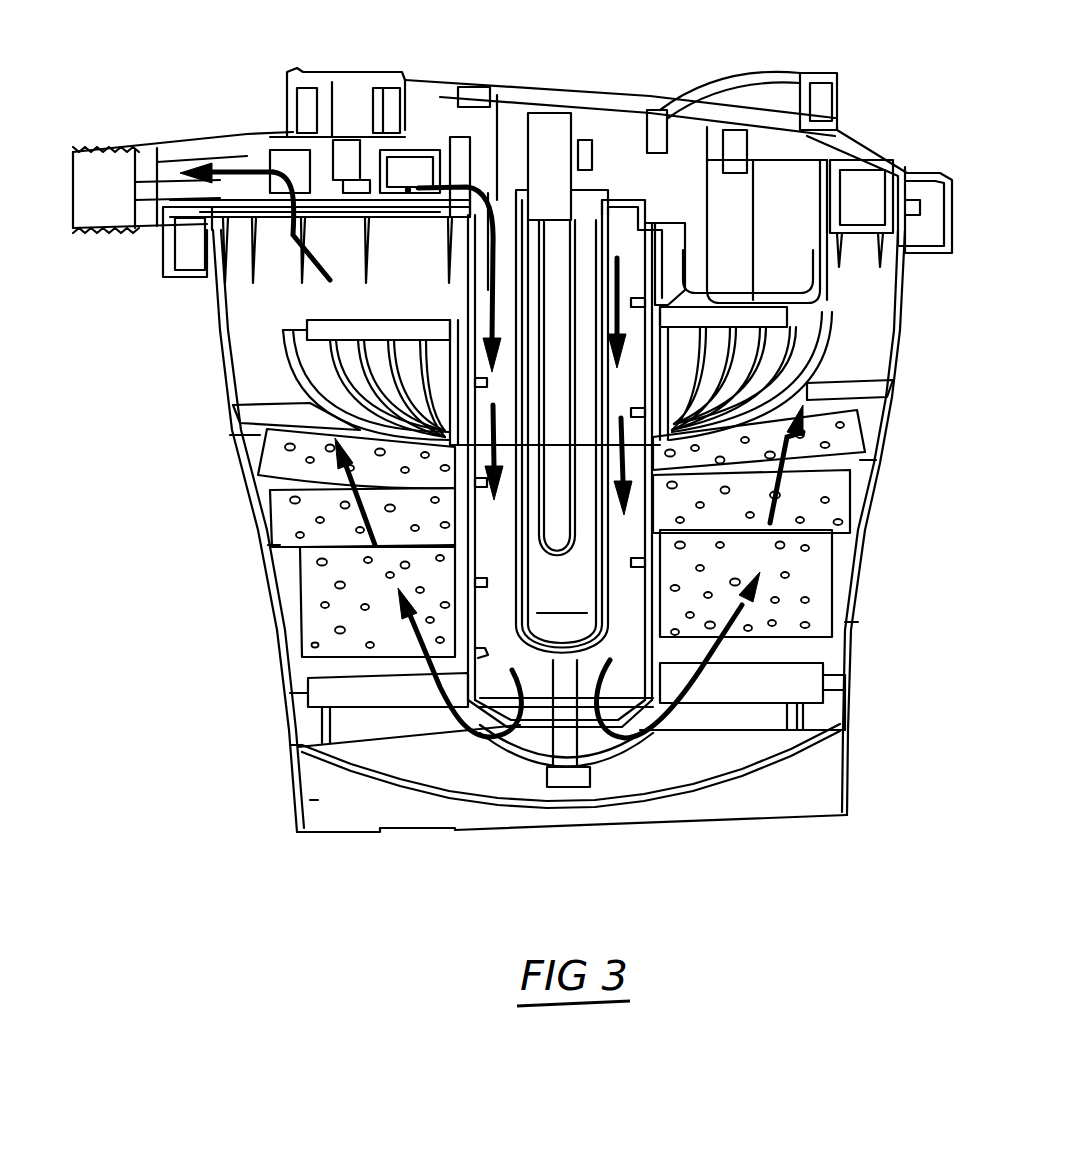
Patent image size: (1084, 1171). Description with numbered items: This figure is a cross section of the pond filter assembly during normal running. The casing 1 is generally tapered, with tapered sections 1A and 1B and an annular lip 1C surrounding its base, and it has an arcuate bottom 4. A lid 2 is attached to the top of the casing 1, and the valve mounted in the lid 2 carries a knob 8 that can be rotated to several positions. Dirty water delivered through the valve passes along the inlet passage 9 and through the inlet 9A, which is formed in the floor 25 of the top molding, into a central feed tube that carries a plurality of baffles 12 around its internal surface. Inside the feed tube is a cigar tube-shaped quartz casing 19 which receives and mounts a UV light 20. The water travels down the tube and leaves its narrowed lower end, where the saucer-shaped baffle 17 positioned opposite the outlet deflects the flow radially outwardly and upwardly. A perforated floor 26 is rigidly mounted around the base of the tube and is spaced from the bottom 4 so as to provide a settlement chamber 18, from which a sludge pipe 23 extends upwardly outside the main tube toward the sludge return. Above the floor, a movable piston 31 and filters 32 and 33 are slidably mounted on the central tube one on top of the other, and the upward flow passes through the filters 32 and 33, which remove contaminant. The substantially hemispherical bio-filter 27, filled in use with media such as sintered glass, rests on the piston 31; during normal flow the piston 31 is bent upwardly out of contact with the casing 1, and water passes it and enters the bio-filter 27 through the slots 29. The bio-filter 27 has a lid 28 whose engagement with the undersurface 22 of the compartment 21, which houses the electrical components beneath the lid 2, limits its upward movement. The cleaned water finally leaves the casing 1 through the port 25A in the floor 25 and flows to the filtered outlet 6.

The casing 1 is at (554, 519).
The tapered section 1A is at (585, 460).
The tapered section 1B is at (599, 591).
The annular lip 1C is at (604, 758).
The lid 2 is at (600, 95).
The arcuate bottom 4 is at (733, 773).
The filtered outlet 6 is at (112, 148).
The knob 8 is at (358, 78).
The inlet passage 9 is at (398, 183).
The inlet 9A is at (457, 210).
The baffles 12 is at (488, 648).
The saucer-shaped baffle 17 is at (579, 675).
The settlement chamber 18 is at (353, 796).
The cigar tube-shaped casing 19 is at (605, 198).
The UV light 20 is at (540, 135).
The compartment 21 is at (826, 272).
The undersurface 22 is at (746, 313).
The sludge pipe 23 is at (535, 781).
The floor 25 is at (332, 205).
The port 25A is at (277, 215).
The floor 26 is at (597, 705).
The bio-filter 27 is at (493, 378).
The lid 28 is at (370, 362).
The slots 29 is at (333, 353).
The piston 31 is at (551, 449).
The filter 32 is at (553, 510).
The filter 33 is at (561, 531).